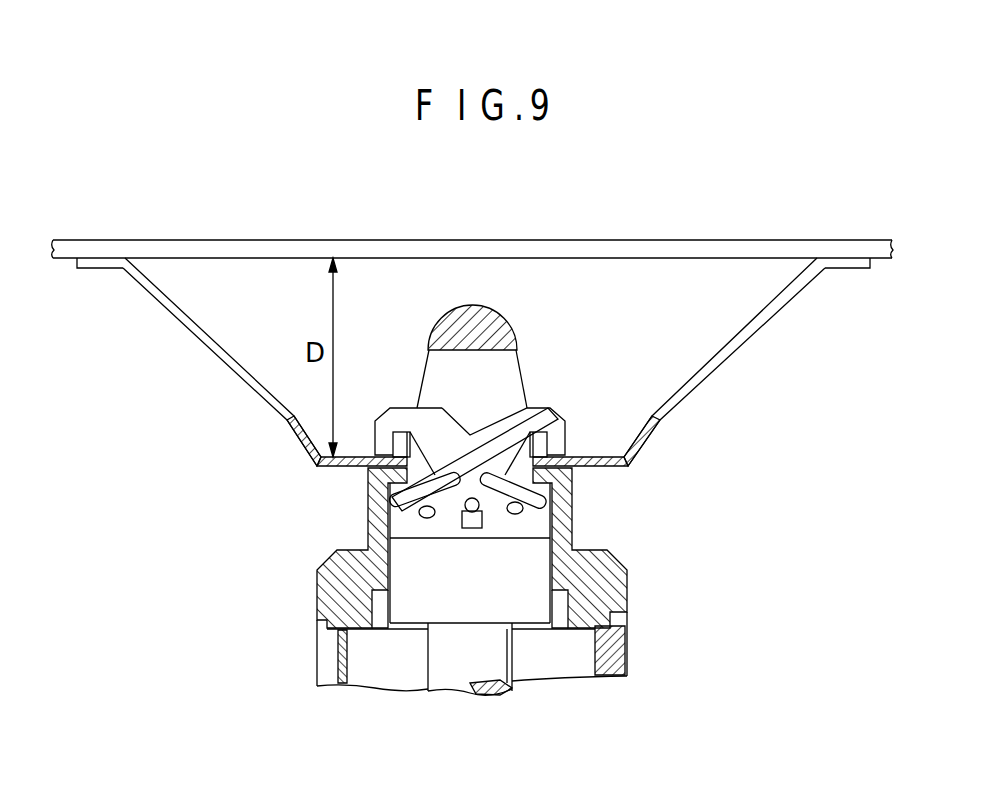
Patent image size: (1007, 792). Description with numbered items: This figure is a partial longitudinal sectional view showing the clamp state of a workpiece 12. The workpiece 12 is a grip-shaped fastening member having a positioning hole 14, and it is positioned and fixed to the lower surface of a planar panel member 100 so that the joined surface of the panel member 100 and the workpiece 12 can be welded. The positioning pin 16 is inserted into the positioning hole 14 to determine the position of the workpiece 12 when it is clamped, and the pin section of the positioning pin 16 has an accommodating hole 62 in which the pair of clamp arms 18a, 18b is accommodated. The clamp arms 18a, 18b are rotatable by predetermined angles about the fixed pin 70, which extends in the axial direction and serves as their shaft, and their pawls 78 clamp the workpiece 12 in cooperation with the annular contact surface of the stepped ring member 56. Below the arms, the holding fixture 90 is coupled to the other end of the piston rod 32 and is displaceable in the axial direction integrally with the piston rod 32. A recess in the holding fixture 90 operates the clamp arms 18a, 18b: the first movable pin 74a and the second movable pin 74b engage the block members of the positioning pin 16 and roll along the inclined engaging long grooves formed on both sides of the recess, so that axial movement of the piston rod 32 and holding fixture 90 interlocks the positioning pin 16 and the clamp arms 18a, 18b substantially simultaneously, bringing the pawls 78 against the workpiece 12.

The panel member 100 is at (620, 250).
The workpiece 12 is at (703, 387).
The positioning pin 16 is at (508, 322).
The accommodating hole 62 is at (510, 365).
The positioning hole 14 is at (522, 412).
The clamp arm 18a is at (425, 418).
The clamp arm 18b is at (490, 427).
The pawls 78 is at (385, 448).
The first movable pin 74a is at (412, 506).
The second movable pin 74b is at (533, 503).
The fixed pin 70 is at (472, 528).
The stepped ring member 56 is at (612, 578).
The holding fixture 90 is at (528, 608).
The piston rod 32 is at (457, 682).